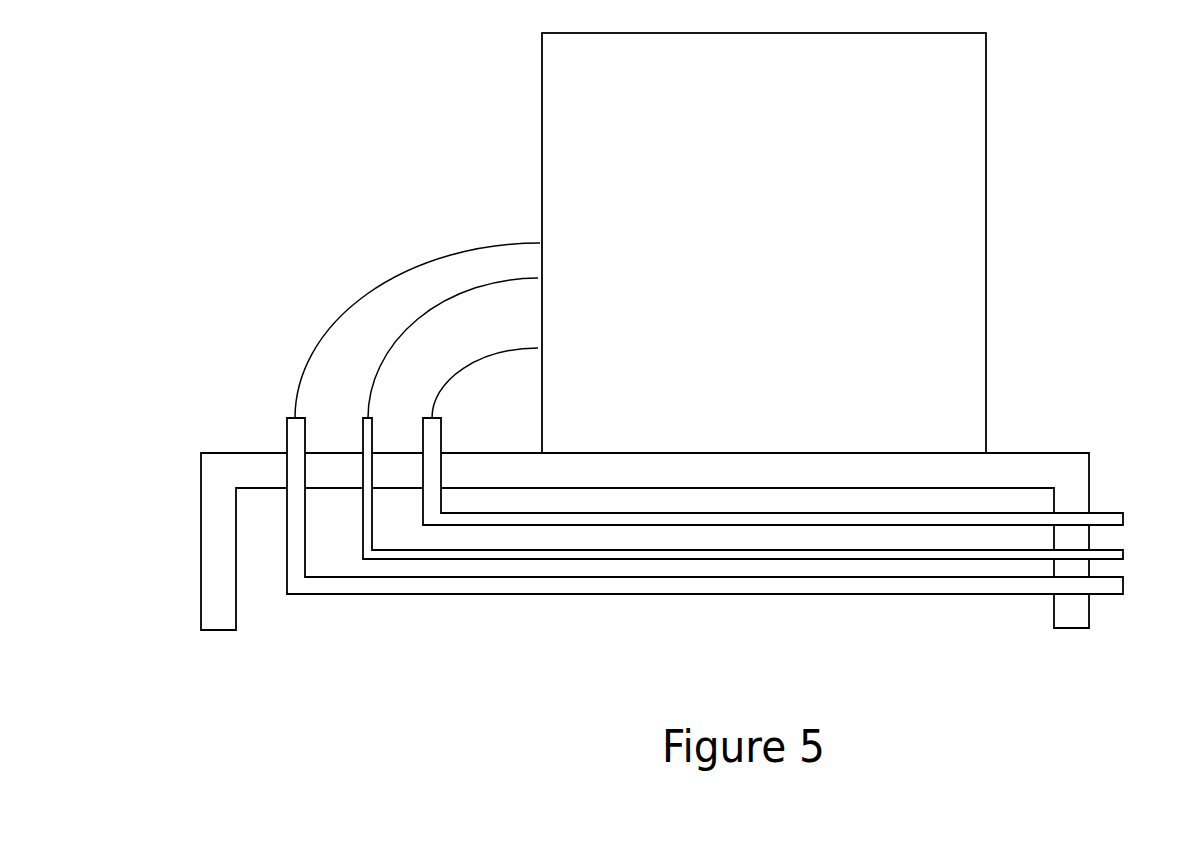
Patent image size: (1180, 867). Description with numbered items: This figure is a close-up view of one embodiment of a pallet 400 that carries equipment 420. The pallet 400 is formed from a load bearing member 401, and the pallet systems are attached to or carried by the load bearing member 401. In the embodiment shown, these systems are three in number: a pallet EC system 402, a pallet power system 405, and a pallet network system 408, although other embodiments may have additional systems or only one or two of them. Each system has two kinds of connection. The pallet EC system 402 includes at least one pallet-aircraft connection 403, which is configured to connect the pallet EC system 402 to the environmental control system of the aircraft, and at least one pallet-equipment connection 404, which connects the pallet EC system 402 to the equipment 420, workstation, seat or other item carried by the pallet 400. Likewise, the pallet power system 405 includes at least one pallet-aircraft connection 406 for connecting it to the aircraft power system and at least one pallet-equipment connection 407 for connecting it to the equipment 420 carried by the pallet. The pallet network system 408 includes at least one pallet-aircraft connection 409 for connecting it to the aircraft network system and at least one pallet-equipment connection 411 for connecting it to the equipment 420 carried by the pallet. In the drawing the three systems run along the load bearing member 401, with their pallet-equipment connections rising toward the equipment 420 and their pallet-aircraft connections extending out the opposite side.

The pallet 400 is at (642, 417).
The load bearing member 401 is at (258, 490).
The pallet EC system 402 is at (768, 525).
The pallet-aircraft connection 403 is at (1107, 513).
The pallet-equipment connection 404 is at (421, 437).
The pallet power system 405 is at (586, 560).
The pallet-aircraft connection 406 is at (1108, 562).
The pallet-equipment connection 407 is at (361, 437).
The pallet network system 408 is at (359, 595).
The pallet-aircraft connection 409 is at (1108, 595).
The pallet-equipment connection 411 is at (284, 437).
The equipment 420 is at (826, 264).